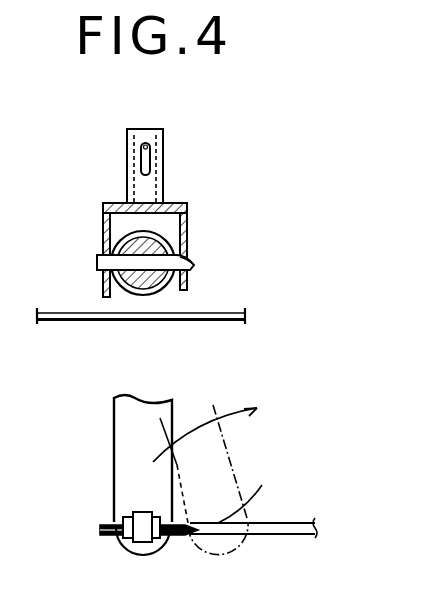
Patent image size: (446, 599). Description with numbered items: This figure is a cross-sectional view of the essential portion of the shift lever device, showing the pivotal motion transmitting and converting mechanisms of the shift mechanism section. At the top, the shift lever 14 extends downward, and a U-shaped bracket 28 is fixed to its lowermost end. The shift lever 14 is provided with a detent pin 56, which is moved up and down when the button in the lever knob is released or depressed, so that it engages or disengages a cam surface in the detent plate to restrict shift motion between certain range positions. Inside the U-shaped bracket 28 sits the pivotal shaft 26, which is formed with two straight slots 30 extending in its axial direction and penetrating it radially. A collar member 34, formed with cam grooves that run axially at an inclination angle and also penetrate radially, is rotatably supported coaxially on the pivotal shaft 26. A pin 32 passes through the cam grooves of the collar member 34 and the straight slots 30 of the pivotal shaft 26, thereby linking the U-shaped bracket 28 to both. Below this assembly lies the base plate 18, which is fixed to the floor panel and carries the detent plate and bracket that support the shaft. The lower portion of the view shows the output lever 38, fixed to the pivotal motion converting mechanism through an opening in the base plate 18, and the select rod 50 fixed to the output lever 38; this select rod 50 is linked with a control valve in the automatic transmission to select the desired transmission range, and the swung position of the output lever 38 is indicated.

The shift lever 14 is at (164, 137).
The detent pin 56 is at (141, 149).
The U-shaped bracket 28 is at (183, 203).
The straight slots 30 is at (192, 258).
The pin 32 is at (186, 266).
The pivotal shaft 26 is at (130, 296).
The collar member 34 is at (158, 296).
The base plate 18 is at (228, 321).
The output lever 38 is at (226, 428).
The select rod 50 is at (300, 521).